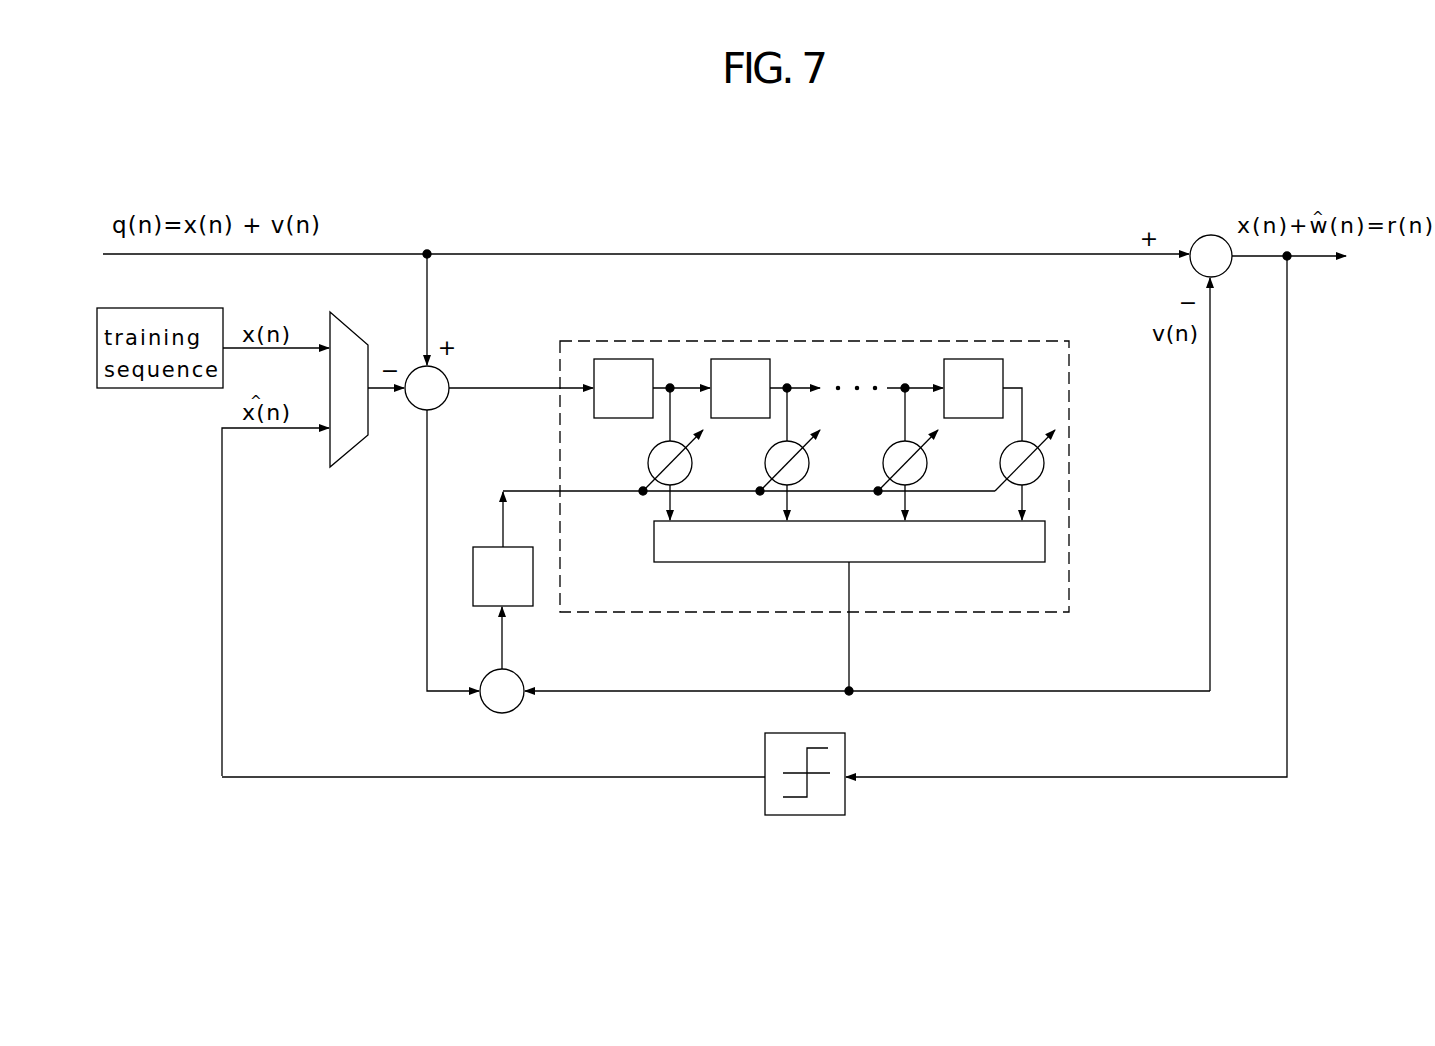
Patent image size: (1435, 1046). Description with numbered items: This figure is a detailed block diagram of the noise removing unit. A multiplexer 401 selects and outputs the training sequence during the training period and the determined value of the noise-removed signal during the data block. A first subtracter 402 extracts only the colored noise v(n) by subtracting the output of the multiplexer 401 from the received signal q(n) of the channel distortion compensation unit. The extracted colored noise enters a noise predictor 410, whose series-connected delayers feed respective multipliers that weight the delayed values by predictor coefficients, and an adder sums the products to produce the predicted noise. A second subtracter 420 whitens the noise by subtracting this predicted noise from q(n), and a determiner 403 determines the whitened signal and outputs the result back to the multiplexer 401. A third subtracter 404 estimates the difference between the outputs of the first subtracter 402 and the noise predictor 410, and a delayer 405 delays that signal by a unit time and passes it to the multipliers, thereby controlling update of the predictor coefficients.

The multiplexer 401 is at (347, 435).
The first subtracter 402 is at (441, 405).
The determiner 403 is at (808, 805).
The third subtracter 404 is at (516, 705).
The delayer 405 is at (513, 597).
The noise predictor 410 is at (1069, 465).
The second subtracter 420 is at (1208, 237).